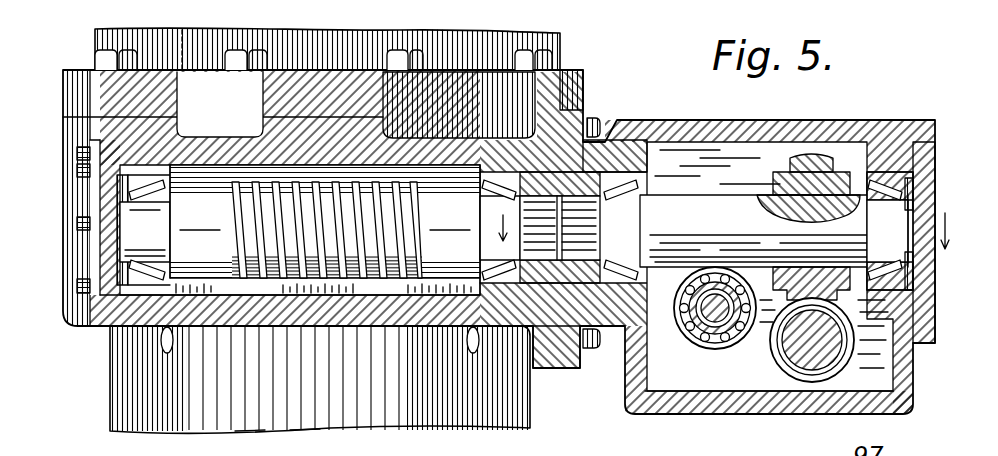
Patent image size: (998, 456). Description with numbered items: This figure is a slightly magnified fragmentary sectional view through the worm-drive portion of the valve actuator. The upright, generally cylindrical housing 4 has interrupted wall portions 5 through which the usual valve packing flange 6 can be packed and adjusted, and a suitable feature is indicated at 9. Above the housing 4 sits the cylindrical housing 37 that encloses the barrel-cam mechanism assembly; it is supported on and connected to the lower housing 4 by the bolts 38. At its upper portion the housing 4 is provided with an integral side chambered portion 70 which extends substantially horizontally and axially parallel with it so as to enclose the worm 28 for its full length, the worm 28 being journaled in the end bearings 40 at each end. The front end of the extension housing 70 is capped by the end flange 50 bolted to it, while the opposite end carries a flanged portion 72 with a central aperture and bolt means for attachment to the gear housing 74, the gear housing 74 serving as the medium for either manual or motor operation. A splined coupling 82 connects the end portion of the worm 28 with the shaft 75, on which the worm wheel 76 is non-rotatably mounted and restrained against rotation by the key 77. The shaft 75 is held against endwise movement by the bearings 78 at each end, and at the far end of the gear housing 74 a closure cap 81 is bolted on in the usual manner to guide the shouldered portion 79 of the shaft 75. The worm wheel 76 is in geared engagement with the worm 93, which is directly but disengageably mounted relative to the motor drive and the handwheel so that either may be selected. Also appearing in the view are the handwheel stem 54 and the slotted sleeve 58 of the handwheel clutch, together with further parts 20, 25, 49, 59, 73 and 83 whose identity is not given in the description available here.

The housing 4 is at (253, 419).
The interrupted wall portions 5 is at (302, 416).
The valve packing flange 6 is at (725, 231).
The mounting base 9 is at (296, 391).
The housing wall 20 is at (117, 311).
The shaft coupling 25 is at (533, 205).
The worm 28 is at (232, 213).
The cylindrical housing 37 is at (559, 42).
The bolts 38 is at (95, 61).
The end bearings 40 is at (463, 341).
The base member 49 is at (821, 448).
The end flange 50 is at (88, 140).
The handwheel stem 54 is at (692, 337).
The sleeve 58 is at (717, 338).
The bearing inner race 59 is at (735, 340).
The side chambered portion 70 is at (213, 326).
The flanged portion 72 is at (547, 369).
The flange bolt 73 is at (589, 350).
The gear housing 74 is at (857, 413).
The shaft 75 is at (707, 203).
The worm wheel 76 is at (840, 175).
The key 77 is at (878, 185).
The bearings 78 is at (647, 138).
The shouldered portion 79 is at (913, 208).
The closure cap 81 is at (933, 337).
The splined coupling 82 is at (593, 182).
The tapered roller bearing 83 is at (623, 187).
The worm 93 is at (853, 353).